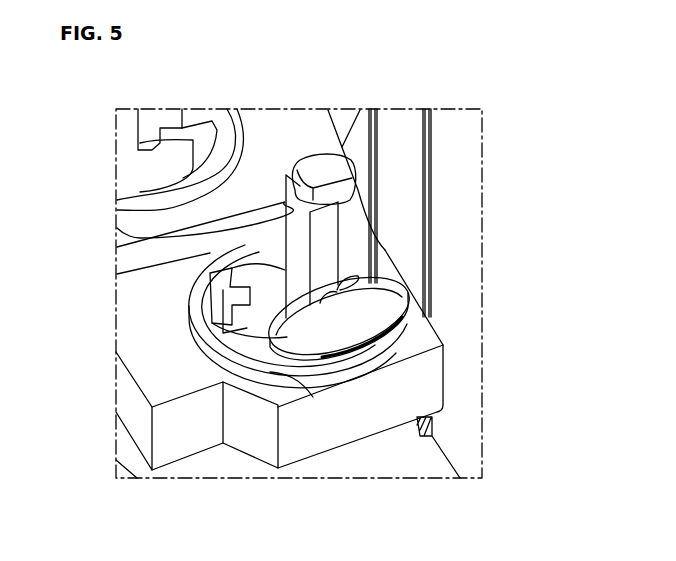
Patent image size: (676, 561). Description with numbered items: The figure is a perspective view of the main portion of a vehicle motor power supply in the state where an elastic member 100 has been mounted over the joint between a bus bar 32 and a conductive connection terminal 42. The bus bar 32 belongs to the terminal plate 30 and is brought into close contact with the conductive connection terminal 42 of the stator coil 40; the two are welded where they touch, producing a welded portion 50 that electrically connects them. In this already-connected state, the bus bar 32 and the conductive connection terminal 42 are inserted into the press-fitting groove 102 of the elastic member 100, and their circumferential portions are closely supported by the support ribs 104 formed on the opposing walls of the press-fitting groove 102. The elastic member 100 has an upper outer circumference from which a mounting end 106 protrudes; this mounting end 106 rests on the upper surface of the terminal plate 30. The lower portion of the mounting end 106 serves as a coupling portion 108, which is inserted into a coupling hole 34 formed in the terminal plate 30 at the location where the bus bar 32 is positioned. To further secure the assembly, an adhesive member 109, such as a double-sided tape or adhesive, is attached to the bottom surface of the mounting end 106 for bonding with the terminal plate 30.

The terminal plate 30 is at (441, 342).
The bus bar 32 is at (285, 180).
The coupling hole 34 is at (220, 290).
The stator coil 40 is at (422, 457).
The conductive connection terminal 42 is at (350, 203).
The welded portion 50 is at (340, 227).
The elastic member 100 is at (393, 260).
The press-fitting groove 102 is at (272, 277).
The support rib 104 is at (405, 290).
The mounting end 106 is at (353, 347).
The coupling portion 108 is at (212, 282).
The adhesive member 109 is at (318, 378).